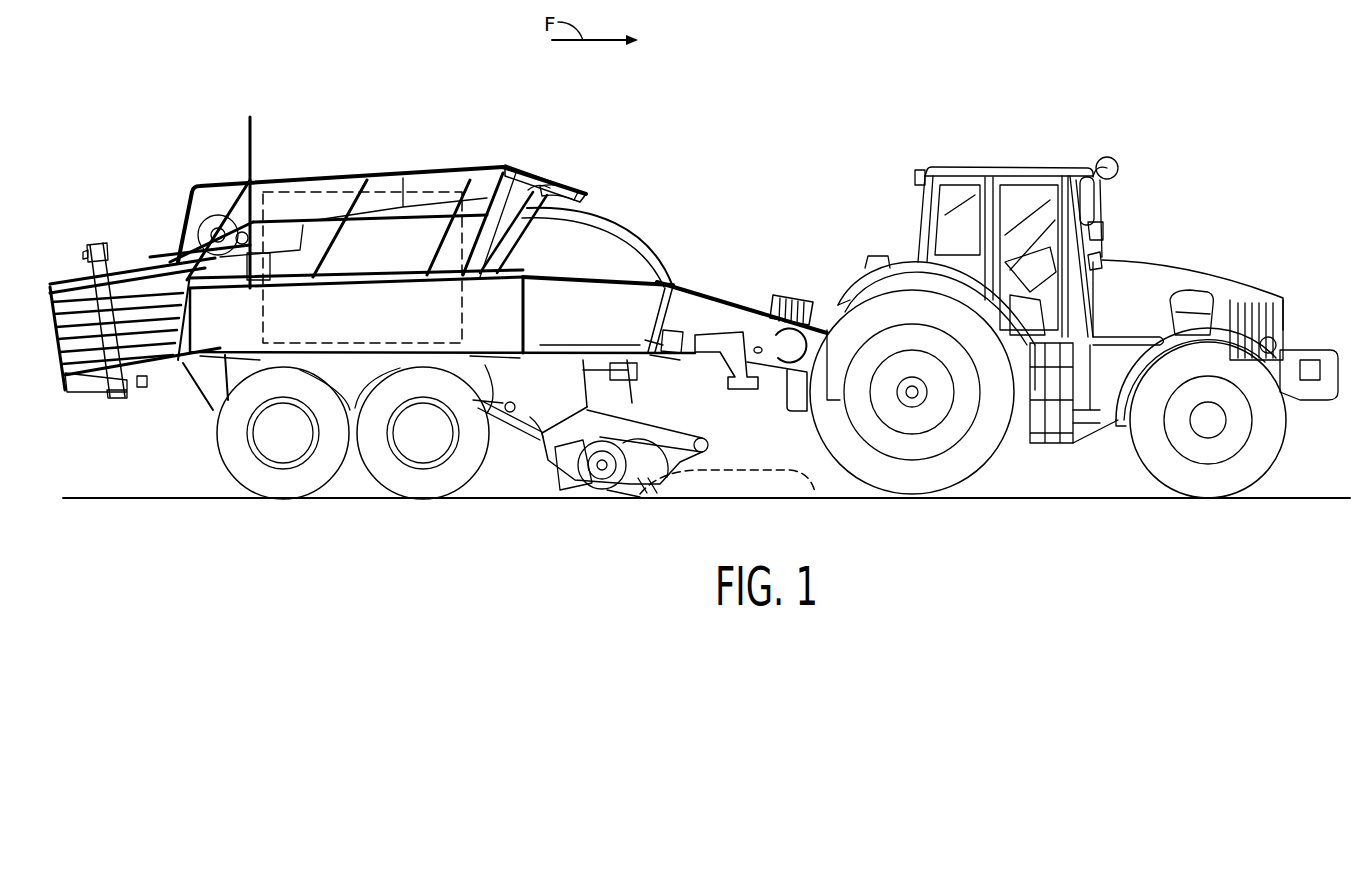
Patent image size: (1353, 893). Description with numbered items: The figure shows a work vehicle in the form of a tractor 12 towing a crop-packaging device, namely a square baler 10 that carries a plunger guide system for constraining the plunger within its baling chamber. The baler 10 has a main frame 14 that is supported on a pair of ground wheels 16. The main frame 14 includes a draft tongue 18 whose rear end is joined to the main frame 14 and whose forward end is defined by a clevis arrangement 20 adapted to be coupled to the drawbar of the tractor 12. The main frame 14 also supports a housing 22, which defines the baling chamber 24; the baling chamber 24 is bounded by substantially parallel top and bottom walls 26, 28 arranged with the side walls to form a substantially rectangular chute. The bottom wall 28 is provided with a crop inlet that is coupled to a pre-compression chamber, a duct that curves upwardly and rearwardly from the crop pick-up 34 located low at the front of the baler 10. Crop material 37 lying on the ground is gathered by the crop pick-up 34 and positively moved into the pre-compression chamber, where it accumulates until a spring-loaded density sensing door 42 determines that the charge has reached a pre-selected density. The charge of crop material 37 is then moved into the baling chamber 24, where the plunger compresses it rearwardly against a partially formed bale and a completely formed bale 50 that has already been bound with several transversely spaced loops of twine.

The baler 10 is at (181, 124).
The tractor 12 is at (1203, 263).
The main frame 14 is at (508, 425).
The ground wheels 16 is at (240, 455).
The draft tongue 18 is at (676, 298).
The clevis arrangement 20 is at (795, 293).
The housing 22 is at (580, 243).
The baling chamber 24 is at (318, 175).
The top wall 26 is at (448, 163).
The bottom wall 28 is at (213, 400).
The crop pick-up 34 is at (645, 488).
The crop material 37 is at (753, 494).
The density sensing door 42 is at (556, 210).
The completely formed bale 50 is at (78, 400).